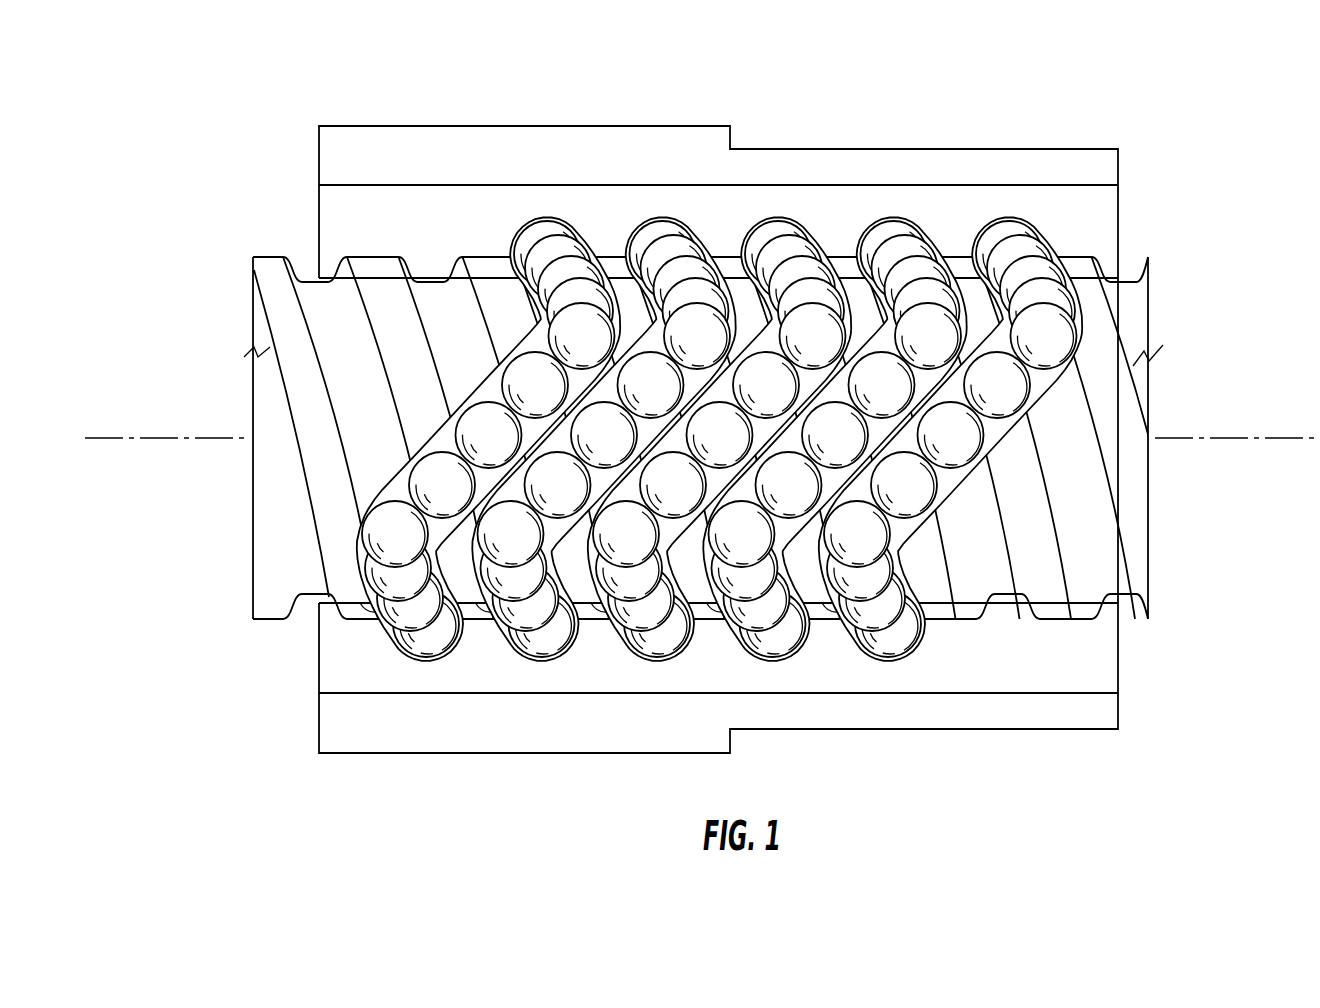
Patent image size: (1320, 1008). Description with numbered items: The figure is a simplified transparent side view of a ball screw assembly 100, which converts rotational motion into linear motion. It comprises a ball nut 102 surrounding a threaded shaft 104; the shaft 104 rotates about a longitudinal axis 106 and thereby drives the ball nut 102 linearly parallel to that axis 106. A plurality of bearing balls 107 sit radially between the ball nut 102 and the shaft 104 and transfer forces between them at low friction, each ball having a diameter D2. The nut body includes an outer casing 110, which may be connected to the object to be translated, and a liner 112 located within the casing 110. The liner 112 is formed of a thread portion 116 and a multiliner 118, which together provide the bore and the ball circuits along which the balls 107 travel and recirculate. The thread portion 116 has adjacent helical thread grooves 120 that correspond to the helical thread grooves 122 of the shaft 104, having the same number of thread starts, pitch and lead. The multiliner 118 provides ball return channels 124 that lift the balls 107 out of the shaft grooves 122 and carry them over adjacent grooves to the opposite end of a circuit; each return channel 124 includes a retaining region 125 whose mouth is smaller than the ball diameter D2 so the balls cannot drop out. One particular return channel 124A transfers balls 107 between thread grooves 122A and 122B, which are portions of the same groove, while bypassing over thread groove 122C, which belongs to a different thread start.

The ball screw assembly 100 is at (702, 451).
The ball nut 102 is at (754, 464).
The threaded shaft 104 is at (697, 493).
The longitudinal axis 106 is at (1237, 438).
The bearing balls 107 is at (1000, 459).
The outer casing 110 is at (438, 732).
The liner 112 is at (347, 221).
The thread portion 116 is at (1095, 222).
The multiliner 118 is at (1098, 326).
The thread grooves 120 is at (807, 447).
The thread grooves 122 is at (302, 252).
The thread groove 122A is at (940, 648).
The thread groove 122B is at (1088, 545).
The thread groove 122C is at (1002, 622).
The ball return channels 124 is at (662, 364).
The return channel 124A is at (950, 506).
The retaining region 125 is at (1038, 372).
The diameter of the bearing balls D2 is at (834, 439).